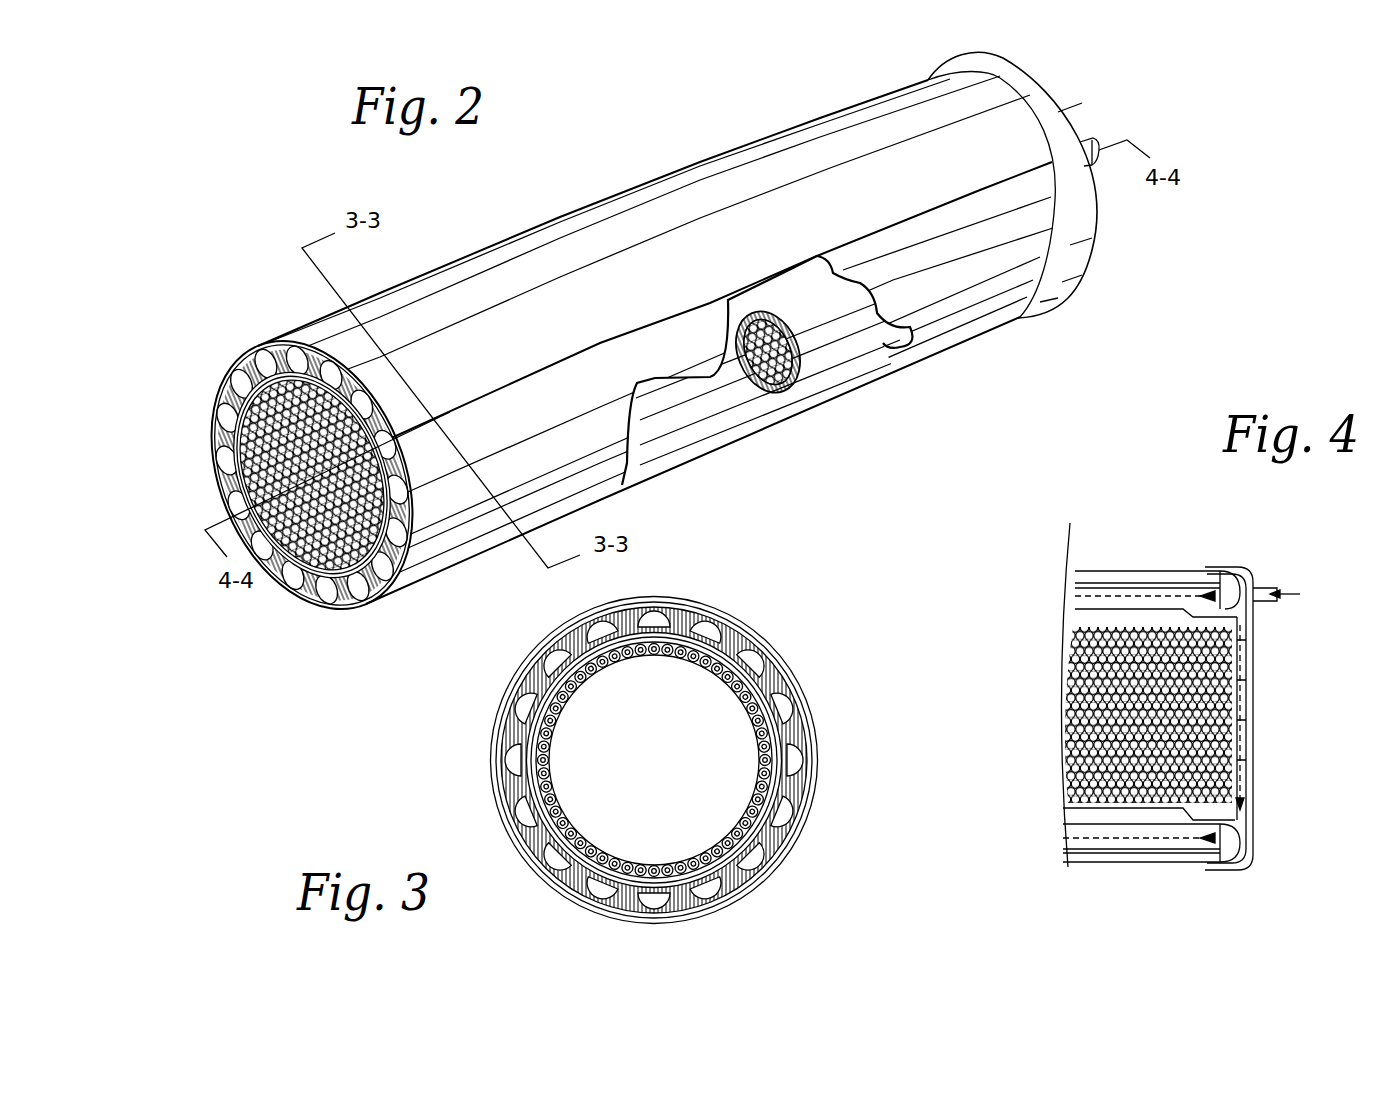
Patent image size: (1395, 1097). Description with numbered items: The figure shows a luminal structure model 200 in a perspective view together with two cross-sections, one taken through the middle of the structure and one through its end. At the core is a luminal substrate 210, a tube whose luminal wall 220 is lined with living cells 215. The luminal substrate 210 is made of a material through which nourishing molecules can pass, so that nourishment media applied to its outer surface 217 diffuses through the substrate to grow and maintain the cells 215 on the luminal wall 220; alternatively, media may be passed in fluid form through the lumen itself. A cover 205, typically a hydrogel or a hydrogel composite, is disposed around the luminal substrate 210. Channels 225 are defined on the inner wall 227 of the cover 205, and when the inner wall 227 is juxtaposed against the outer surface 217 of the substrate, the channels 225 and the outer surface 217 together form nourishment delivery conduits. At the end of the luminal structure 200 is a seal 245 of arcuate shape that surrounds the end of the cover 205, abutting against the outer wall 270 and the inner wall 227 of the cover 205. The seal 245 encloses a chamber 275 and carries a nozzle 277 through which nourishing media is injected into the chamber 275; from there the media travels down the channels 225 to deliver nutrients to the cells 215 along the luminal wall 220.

In FIG. 2, the luminal structure model 200 is at (690, 114).
In FIG. 2, the cover 205 is at (838, 112).
In FIG. 3, the cover 205 is at (565, 873).
In FIG. 4, the cover 205 is at (1141, 716).
In FIG. 2, the luminal substrate 210 is at (217, 378).
In FIG. 3, the luminal substrate 210 is at (772, 815).
In FIG. 4, the luminal substrate 210 is at (1150, 607).
In FIG. 2, the living cells 215 is at (322, 588).
In FIG. 3, the living cells 215 is at (550, 718).
In FIG. 3, the outer surface 217 is at (697, 612).
In FIG. 3, the luminal wall 220 is at (745, 672).
In FIG. 3, the channels 225 is at (647, 910).
In FIG. 3, the inner wall 227 is at (535, 832).
In FIG. 2, the seal 245 is at (1040, 104).
In FIG. 4, the seal 245 is at (1225, 560).
In FIG. 3, the outer wall 270 is at (815, 748).
In FIG. 4, the chamber 275 is at (1230, 840).
In FIG. 4, the nozzle 277 is at (1260, 582).